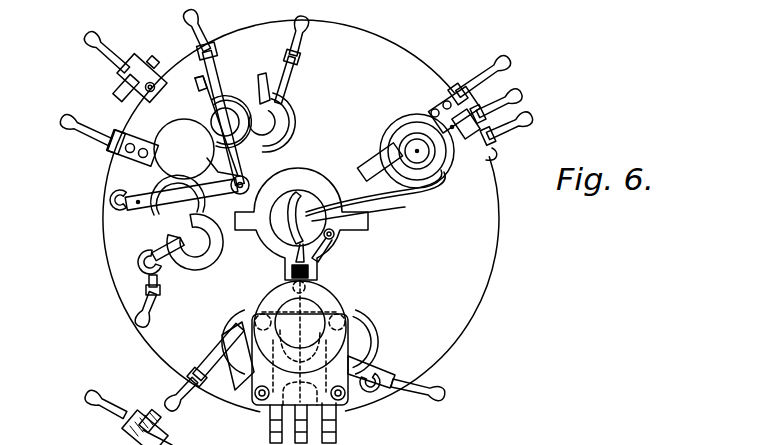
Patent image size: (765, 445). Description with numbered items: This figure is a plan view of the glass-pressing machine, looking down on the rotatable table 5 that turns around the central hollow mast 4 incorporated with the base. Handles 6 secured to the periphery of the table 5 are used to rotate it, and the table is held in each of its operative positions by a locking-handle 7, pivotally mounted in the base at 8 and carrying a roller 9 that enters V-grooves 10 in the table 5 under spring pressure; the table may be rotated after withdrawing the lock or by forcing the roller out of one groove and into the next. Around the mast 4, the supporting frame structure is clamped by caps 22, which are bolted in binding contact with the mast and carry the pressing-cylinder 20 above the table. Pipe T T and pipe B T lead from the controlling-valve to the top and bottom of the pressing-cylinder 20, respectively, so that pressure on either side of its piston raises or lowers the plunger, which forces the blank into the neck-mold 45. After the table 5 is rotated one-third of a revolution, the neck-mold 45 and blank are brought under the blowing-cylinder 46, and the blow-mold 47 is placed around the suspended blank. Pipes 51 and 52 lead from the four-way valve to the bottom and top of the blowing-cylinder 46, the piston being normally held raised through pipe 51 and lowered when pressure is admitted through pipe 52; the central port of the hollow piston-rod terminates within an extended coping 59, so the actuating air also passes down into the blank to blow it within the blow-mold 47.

The mast 4 is at (340, 230).
The table 5 is at (108, 282).
The handles 6 is at (70, 132).
The locking-handle 7 is at (98, 47).
The pivot 8 is at (151, 58).
The roller 9 is at (144, 105).
The V-grooves 10 is at (158, 98).
The pressing-cylinder 20 is at (328, 307).
The caps 22 is at (303, 180).
The neck-mold 45 is at (278, 122).
The blowing-cylinder 46 is at (403, 142).
The blow-mold 47 is at (250, 100).
The pipe 51 is at (388, 215).
The pipe 52 is at (410, 203).
The coping 59 is at (417, 149).
The pipe T T TT is at (283, 250).
The pipe B T BT is at (330, 242).